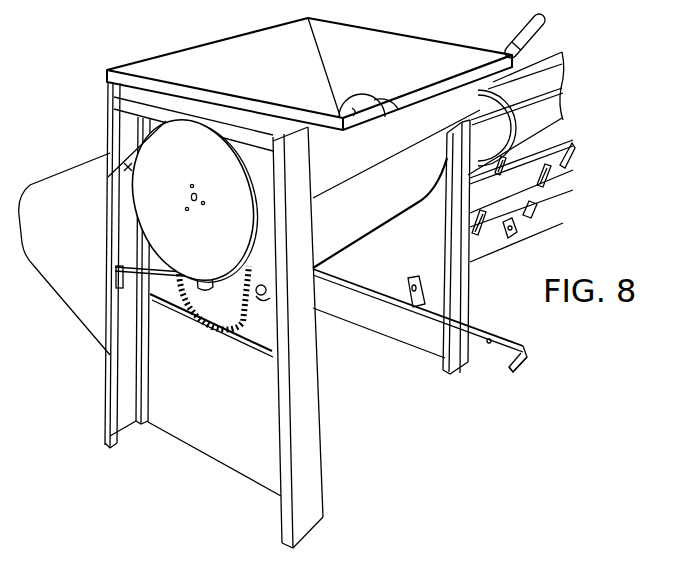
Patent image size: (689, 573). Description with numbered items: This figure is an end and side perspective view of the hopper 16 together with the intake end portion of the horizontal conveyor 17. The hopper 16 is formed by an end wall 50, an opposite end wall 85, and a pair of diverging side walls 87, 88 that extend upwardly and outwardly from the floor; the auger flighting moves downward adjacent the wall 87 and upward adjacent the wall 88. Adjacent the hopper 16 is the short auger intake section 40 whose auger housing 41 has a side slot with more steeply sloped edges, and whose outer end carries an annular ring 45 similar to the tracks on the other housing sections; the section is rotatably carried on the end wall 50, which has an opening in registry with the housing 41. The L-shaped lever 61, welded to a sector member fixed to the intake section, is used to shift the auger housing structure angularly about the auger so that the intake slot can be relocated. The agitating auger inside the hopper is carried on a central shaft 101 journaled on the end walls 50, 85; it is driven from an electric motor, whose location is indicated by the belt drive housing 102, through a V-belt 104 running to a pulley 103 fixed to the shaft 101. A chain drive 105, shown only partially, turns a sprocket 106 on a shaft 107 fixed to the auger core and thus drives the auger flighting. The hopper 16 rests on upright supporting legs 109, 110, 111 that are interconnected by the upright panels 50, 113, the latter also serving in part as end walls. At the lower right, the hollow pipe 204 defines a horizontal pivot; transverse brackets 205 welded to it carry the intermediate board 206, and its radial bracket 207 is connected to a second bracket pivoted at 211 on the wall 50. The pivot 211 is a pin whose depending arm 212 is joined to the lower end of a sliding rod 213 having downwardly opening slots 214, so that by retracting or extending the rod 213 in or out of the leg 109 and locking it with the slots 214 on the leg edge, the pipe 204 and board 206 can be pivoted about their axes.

The hopper 16 is at (369, 41).
The L-shaped lever 61 is at (512, 25).
The horizontal conveyor 17 is at (556, 44).
The side wall 87 is at (282, 73).
The end wall 50 is at (414, 73).
The auger intake section 40 is at (484, 108).
The auger housing 41 is at (486, 113).
The annular ring 45 is at (518, 134).
The intermediate board 206 is at (560, 163).
The transverse bracket 205 is at (553, 204).
The hollow pipe 204 is at (541, 208).
The radial bracket 207 is at (506, 238).
The side wall 88 is at (401, 196).
The supporting leg 109 is at (462, 217).
The pivot 211 is at (409, 287).
The depending arm 212 is at (411, 304).
The sliding rod 213 is at (477, 331).
The slot 214 is at (490, 344).
The belt drive housing 102 is at (60, 173).
The pulley 103 is at (191, 155).
The V-belt 104 is at (131, 171).
The central shaft 101 is at (197, 198).
The end wall 85 is at (257, 262).
The chain drive 105 is at (264, 289).
The sprocket 106 is at (222, 318).
The shaft 107 is at (193, 315).
The supporting leg 110 is at (144, 399).
The supporting leg 111 is at (277, 381).
The upright panel 113 is at (248, 438).